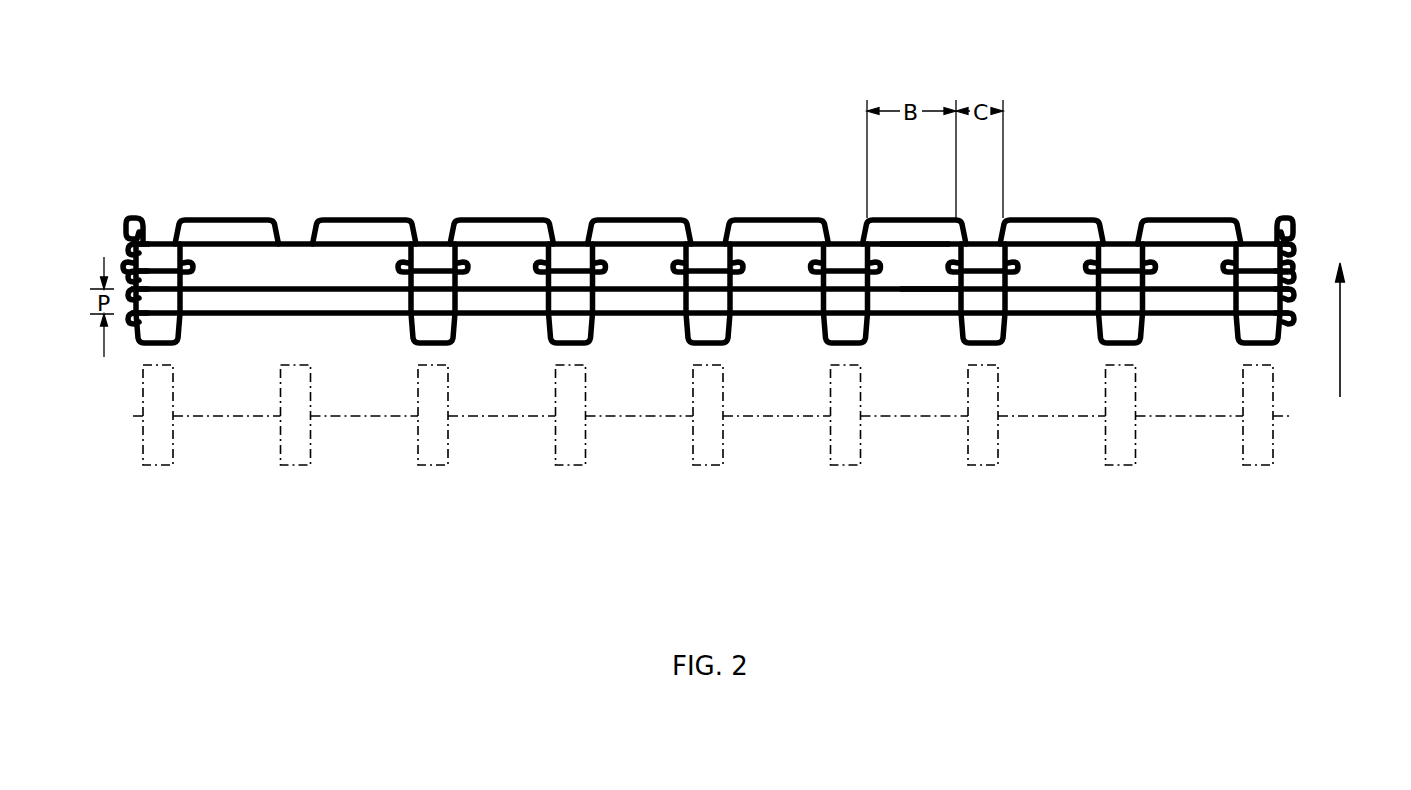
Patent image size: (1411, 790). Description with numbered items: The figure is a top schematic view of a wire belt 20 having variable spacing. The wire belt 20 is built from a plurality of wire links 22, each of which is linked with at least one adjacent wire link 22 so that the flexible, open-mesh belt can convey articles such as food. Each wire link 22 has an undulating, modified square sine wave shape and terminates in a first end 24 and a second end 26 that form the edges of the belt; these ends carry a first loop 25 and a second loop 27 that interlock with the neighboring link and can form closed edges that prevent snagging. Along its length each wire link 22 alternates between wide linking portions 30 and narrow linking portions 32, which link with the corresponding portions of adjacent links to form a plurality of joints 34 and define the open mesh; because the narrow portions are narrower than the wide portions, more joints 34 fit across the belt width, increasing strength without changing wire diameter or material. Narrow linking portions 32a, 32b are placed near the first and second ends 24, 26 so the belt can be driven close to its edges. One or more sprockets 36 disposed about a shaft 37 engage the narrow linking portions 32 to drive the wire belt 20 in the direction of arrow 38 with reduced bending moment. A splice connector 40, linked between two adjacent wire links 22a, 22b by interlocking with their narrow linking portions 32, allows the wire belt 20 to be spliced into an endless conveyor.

The wire belt 20 is at (136, 55).
The wire link 22 is at (365, 218).
The wire link 22a is at (913, 243).
The wire link 22b is at (930, 260).
The first end 24 is at (128, 326).
The first loop 25 is at (133, 218).
The second end 26 is at (1298, 322).
The second loop 27 is at (1287, 219).
The wide linking portion 30 is at (507, 218).
The narrow linking portion 32 is at (431, 244).
The narrow linking portion 32a is at (160, 247).
The narrow linking portion 32b is at (1252, 246).
The joint 34 is at (700, 243).
The sprocket 36 is at (570, 466).
The shaft 37 is at (645, 418).
The arrow 38 is at (1340, 333).
The splice connector 40 is at (845, 290).